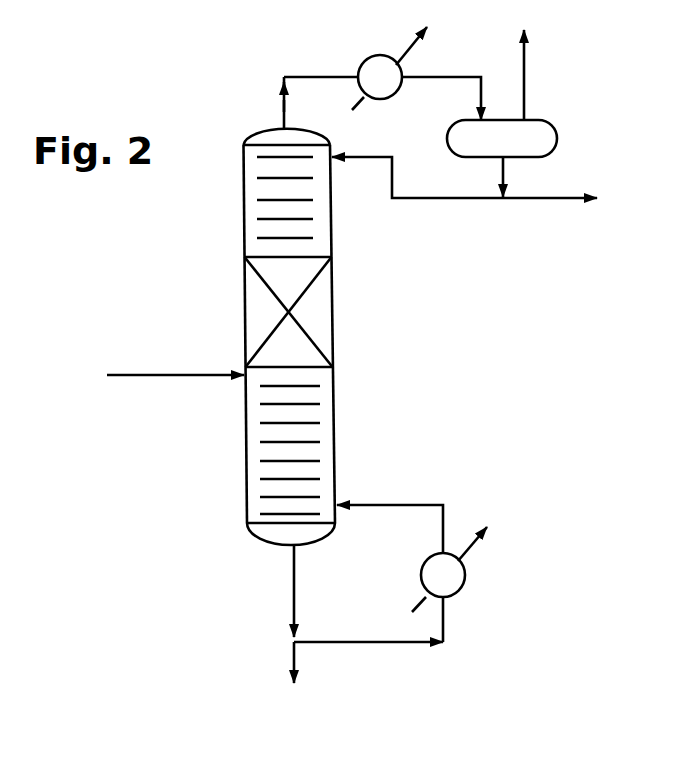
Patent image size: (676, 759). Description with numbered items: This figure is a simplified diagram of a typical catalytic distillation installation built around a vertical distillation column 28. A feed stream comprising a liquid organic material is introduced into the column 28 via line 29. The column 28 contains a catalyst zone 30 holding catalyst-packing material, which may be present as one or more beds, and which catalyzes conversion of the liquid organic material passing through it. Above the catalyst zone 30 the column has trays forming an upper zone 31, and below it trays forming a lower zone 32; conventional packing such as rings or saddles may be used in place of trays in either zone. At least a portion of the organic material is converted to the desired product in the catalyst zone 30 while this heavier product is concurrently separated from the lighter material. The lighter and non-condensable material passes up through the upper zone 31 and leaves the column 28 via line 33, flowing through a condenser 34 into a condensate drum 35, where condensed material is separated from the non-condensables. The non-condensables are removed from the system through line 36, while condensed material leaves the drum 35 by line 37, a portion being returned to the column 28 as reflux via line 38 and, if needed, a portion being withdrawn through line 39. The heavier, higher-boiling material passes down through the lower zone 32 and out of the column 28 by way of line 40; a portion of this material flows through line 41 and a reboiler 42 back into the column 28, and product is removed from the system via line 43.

The column 28 is at (333, 236).
The line 29 is at (197, 374).
The catalyst zone 30 is at (320, 315).
The upper zone 31 is at (262, 218).
The lower zone 32 is at (318, 417).
The line 33 is at (283, 112).
The condenser 34 is at (373, 63).
The condensate drum 35 is at (557, 135).
The line 36 is at (525, 80).
The line 37 is at (505, 165).
The line 38 is at (468, 199).
The line 39 is at (557, 199).
The line 40 is at (295, 588).
The line 41 is at (397, 644).
The reboiler 42 is at (458, 583).
The line 43 is at (294, 655).